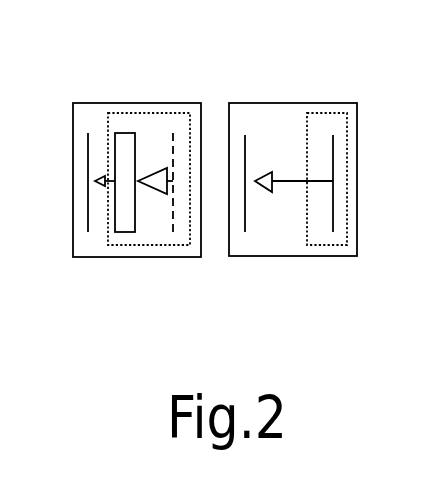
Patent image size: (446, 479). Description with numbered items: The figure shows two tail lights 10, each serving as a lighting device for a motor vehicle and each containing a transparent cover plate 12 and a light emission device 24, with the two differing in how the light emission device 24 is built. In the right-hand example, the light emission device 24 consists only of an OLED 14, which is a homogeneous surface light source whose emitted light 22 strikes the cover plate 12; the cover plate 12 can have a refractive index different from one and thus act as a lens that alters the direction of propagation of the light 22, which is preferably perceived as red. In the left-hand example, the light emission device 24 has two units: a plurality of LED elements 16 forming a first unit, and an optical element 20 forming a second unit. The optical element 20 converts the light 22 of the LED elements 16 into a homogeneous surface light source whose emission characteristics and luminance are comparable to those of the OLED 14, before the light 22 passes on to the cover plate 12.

The tail light 10 is at (93, 103).
The cover plate 12 is at (88, 156).
The OLED 14 is at (333, 212).
The LED elements 16 is at (172, 143).
The optical element 20 is at (122, 220).
The light 22 is at (105, 183).
The light emission device 24 is at (152, 113).